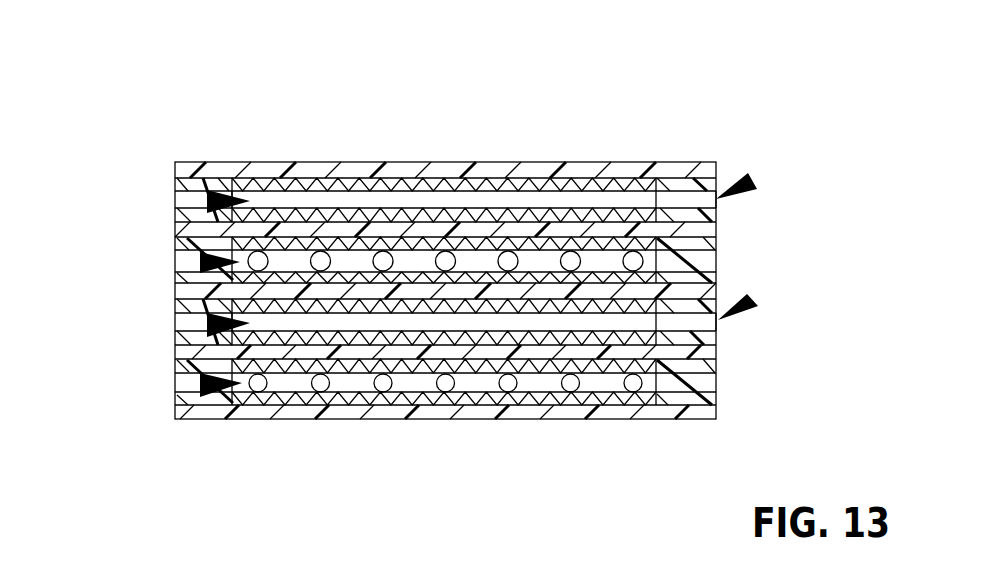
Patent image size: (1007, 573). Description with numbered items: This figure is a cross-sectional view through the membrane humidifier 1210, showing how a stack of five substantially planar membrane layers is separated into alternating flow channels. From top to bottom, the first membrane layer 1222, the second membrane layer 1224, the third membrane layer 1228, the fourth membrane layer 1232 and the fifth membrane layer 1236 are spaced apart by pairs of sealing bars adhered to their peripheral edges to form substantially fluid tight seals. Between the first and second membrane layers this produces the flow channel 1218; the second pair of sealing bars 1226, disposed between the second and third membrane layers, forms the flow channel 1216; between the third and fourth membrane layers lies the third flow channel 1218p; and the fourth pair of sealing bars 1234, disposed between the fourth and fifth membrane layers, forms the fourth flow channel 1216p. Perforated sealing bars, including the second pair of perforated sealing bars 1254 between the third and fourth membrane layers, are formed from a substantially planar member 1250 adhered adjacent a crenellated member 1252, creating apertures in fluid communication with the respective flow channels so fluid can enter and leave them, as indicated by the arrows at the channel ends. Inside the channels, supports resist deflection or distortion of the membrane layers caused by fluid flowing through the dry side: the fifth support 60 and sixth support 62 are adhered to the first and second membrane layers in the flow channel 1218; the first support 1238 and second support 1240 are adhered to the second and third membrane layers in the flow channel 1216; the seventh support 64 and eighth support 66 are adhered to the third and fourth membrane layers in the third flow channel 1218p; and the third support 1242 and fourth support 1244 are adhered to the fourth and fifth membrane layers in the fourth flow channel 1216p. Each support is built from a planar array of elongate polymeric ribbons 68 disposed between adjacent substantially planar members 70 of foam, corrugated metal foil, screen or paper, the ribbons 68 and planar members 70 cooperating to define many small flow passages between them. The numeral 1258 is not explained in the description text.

The membrane humidifier 1210 is at (135, 96).
The first membrane layer 1222 is at (627, 174).
The sixth support 62 is at (323, 190).
The flow channel 1218 is at (175, 210).
The fifth support 60 is at (398, 212).
The second membrane layer 1224 is at (716, 236).
The channel outlet 1258 is at (717, 215).
The second pair of perforated sealing bars 1254 is at (752, 180).
The substantially planar member 1250 is at (685, 185).
The second pair of sealing bars 1226 is at (704, 258).
The first support 1238 is at (472, 247).
The flow channel 1216 is at (200, 260).
The second support 1240 is at (546, 235).
The third membrane layer 1228 is at (712, 287).
The seventh support 64 is at (598, 305).
The flow channel 1218p is at (205, 323).
The eighth support 66 is at (538, 325).
The crenellated member 1252 is at (710, 338).
The fourth membrane layer 1232 is at (707, 352).
The planar members 70 is at (479, 367).
The flow channel 1216p is at (200, 383).
The elongate polymeric ribbons 68 is at (389, 379).
The third support 1242 is at (298, 368).
The fourth support 1244 is at (340, 391).
The fourth pair of sealing bars 1234 is at (707, 383).
The fifth membrane layer 1236 is at (655, 417).